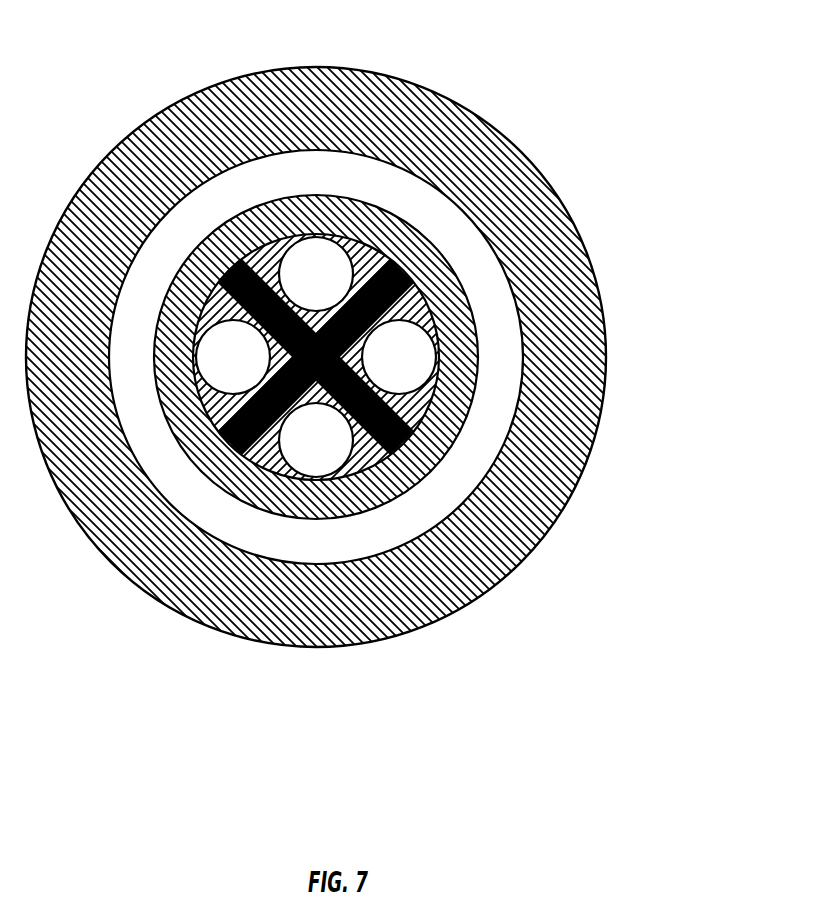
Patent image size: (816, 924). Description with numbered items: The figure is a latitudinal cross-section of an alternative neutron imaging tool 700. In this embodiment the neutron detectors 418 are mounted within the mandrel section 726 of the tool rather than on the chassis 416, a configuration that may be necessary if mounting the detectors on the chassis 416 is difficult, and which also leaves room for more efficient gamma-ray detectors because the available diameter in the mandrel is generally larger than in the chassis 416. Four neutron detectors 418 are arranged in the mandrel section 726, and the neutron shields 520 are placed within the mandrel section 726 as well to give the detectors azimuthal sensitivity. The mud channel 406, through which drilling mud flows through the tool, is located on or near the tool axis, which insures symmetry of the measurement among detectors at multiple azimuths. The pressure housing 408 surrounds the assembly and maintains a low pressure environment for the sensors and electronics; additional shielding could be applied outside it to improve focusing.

The neutron imaging tool 700 is at (560, 58).
The mud channel 406 is at (490, 430).
The pressure housing 408 is at (446, 287).
The chassis 416 is at (263, 262).
The neutron detectors 418 is at (398, 345).
The neutron shields 520 is at (225, 457).
The mandrel section 726 is at (422, 415).